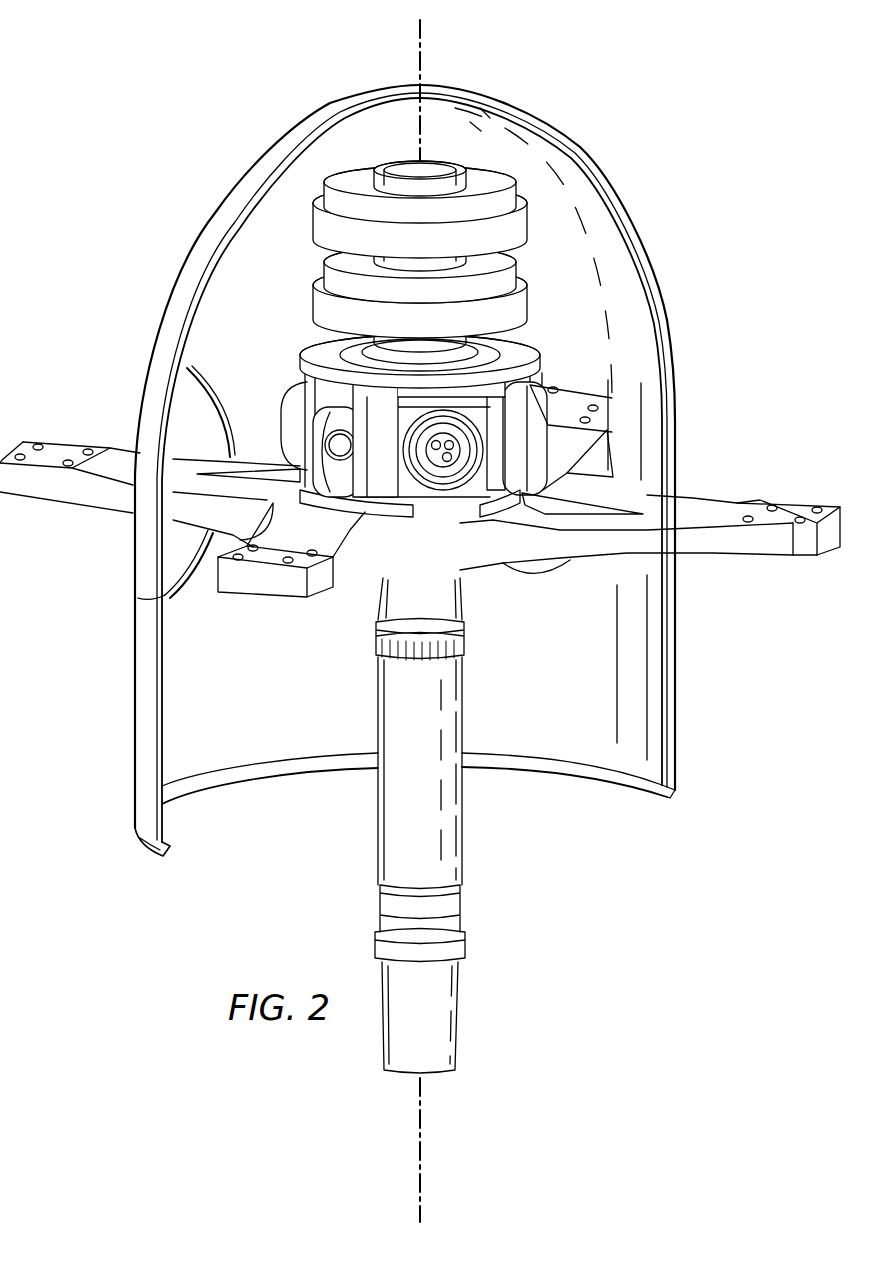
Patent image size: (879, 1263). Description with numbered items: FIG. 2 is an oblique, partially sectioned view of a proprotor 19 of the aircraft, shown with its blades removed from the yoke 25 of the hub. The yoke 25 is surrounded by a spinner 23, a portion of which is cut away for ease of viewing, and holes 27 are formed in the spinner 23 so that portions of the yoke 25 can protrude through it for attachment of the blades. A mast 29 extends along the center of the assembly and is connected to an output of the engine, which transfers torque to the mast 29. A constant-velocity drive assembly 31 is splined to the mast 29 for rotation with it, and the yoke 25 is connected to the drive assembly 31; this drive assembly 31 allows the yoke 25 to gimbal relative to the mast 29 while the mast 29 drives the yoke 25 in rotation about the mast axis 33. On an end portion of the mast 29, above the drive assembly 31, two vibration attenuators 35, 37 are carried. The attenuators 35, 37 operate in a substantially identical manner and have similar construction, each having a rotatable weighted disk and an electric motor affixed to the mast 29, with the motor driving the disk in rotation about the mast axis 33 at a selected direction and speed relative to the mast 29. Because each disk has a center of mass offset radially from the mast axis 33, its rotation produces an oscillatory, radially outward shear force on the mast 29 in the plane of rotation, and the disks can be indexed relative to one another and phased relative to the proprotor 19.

The proprotor 19 is at (573, 72).
The spinner 23 is at (134, 731).
The yoke 25 is at (715, 512).
The holes 27 is at (177, 560).
The mast 29 is at (378, 832).
The constant-velocity drive assembly 31 is at (547, 387).
The mast axis 33 is at (425, 40).
The vibration attenuator 35 is at (533, 217).
The vibration attenuator 37 is at (533, 297).